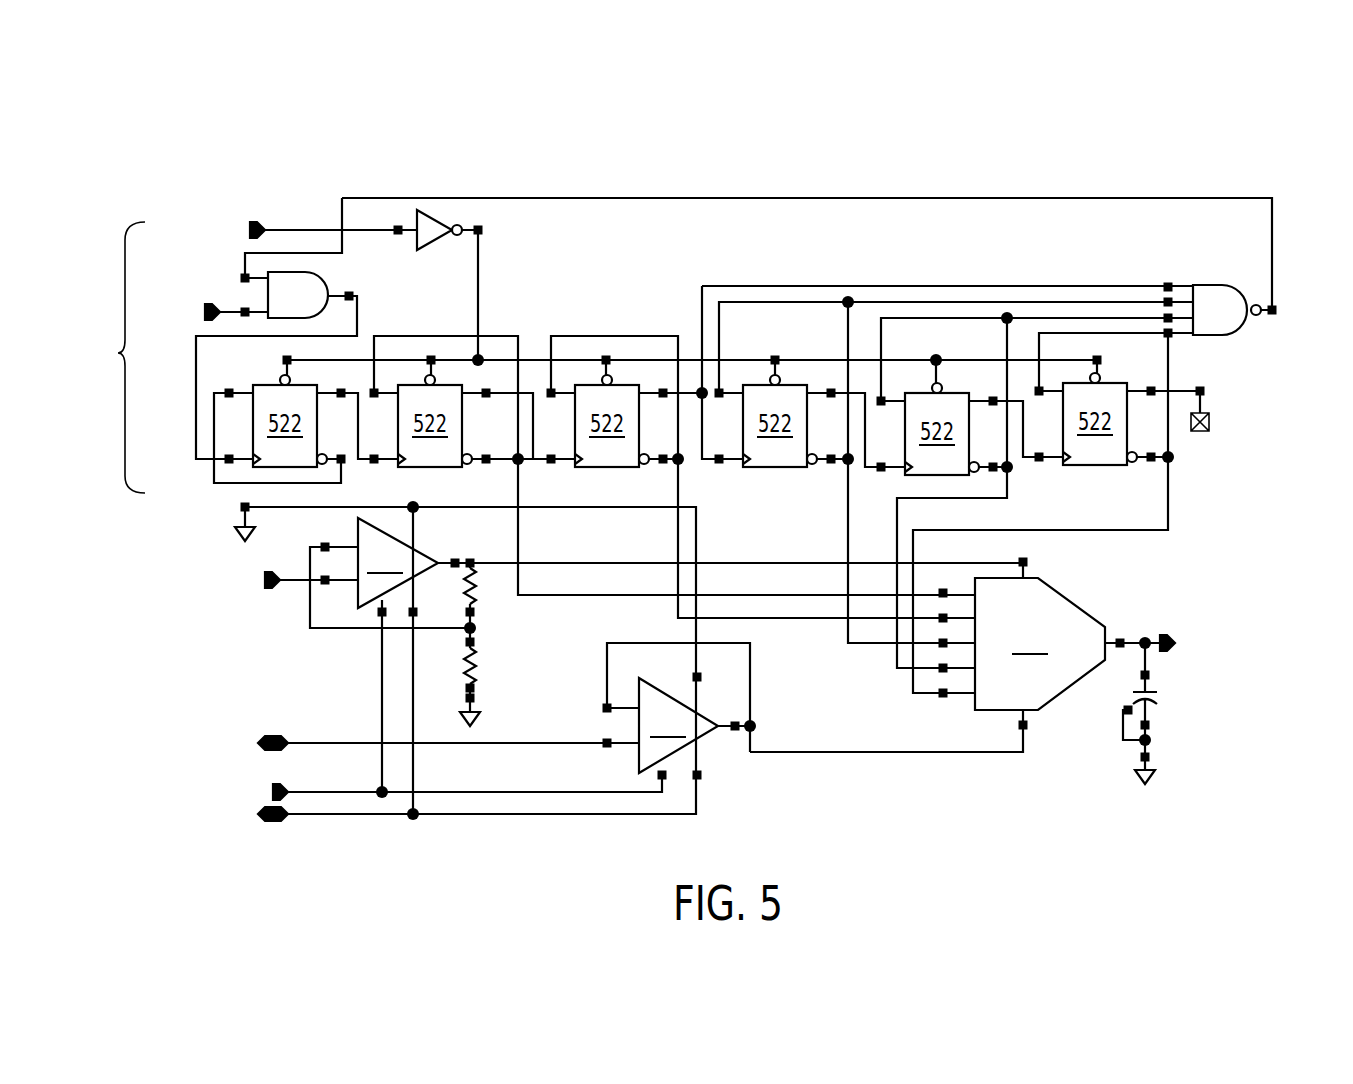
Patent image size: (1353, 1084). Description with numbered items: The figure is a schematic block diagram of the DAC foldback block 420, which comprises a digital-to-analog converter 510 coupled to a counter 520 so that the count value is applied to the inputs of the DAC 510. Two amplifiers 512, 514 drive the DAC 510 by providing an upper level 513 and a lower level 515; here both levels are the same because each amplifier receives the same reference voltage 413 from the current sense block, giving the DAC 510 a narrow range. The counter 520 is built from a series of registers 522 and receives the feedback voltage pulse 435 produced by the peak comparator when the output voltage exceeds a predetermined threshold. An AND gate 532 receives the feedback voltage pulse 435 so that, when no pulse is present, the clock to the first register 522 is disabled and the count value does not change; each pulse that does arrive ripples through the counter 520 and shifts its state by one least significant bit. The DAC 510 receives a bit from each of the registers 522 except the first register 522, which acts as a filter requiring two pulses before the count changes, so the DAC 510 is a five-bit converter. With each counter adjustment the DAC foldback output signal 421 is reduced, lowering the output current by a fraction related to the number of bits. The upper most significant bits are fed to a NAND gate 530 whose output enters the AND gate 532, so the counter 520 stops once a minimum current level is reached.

The DAC foldback block 420 is at (1288, 162).
The counter 520 is at (118, 353).
The register 522 is at (711, 489).
The AND gate 532 is at (330, 286).
The NAND gate 530 is at (1208, 285).
The feedback voltage pulse 435 is at (209, 305).
The amplifier 512 is at (399, 622).
The amplifier 514 is at (680, 711).
The reference voltage 413 is at (266, 592).
The digital-to-analog converter 510 is at (1050, 644).
The upper level 513 is at (1030, 560).
The lower level 515 is at (993, 754).
The DAC foldback output signal 421 is at (1166, 634).